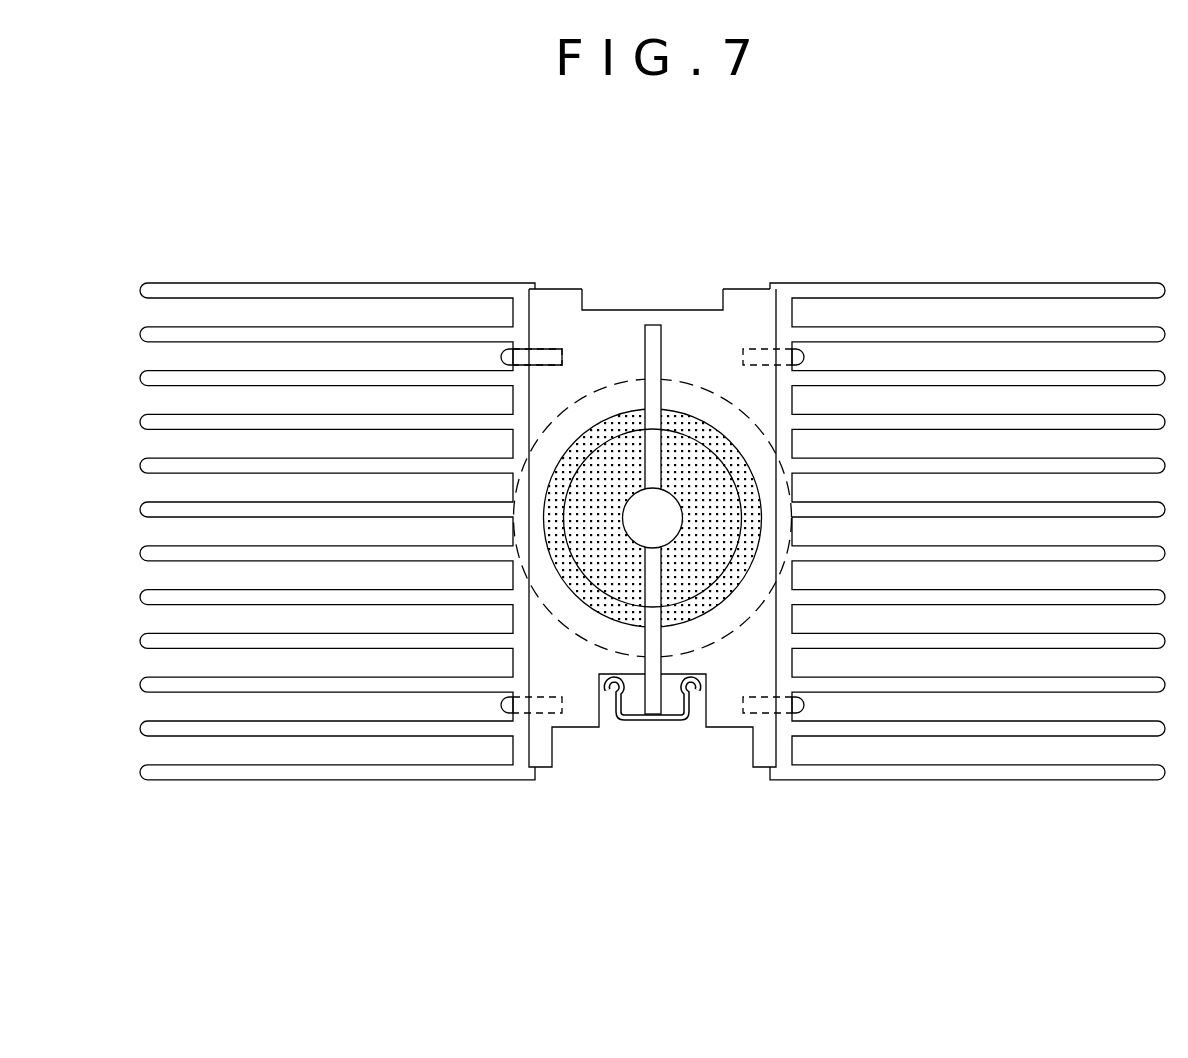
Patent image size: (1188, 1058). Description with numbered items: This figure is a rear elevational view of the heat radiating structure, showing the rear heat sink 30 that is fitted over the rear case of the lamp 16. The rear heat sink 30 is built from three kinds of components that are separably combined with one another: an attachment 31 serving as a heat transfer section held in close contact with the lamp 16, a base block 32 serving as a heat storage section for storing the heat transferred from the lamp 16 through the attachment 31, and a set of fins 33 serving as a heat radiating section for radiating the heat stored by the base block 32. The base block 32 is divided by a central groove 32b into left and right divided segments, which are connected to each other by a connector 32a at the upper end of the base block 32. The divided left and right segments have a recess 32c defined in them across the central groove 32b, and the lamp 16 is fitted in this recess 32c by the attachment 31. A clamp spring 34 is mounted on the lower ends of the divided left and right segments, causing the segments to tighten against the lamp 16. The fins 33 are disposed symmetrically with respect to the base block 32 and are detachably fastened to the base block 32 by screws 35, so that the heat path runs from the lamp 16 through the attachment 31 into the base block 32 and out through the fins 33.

The rear heat sink 30 is at (647, 283).
The lamp 16 is at (592, 387).
The attachment 31 is at (607, 573).
The base block 32 is at (716, 357).
The connector 32a is at (658, 310).
The central groove 32b is at (650, 350).
The recess 32c is at (747, 562).
The fins 33 is at (331, 336).
The clamp spring 34 is at (650, 724).
The screws 35 is at (497, 352).